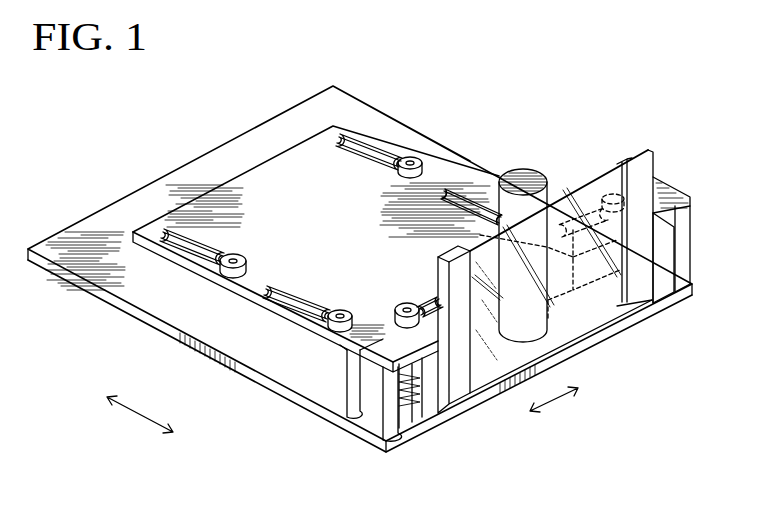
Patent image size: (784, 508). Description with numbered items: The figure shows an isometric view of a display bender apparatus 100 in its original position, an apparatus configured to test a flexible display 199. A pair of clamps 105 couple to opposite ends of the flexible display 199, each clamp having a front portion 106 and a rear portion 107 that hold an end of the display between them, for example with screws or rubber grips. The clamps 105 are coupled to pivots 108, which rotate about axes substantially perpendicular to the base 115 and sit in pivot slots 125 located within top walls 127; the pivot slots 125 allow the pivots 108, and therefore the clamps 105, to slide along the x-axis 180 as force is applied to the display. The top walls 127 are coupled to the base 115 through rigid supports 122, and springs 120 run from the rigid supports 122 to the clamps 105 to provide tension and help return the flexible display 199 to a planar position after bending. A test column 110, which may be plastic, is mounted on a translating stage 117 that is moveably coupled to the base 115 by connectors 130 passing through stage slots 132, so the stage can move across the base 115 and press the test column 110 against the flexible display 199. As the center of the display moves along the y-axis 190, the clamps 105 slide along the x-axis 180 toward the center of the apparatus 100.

The display bender apparatus 100 is at (753, 308).
The clamps 105 is at (468, 375).
The front portion 106 is at (637, 190).
The rear portion 107 is at (623, 160).
The pivots 108 is at (405, 417).
The test column 110 is at (530, 170).
The base 115 is at (182, 312).
The translating stage 117 is at (262, 178).
The springs 120 is at (683, 247).
The rigid supports 122 is at (383, 420).
The pivot slots 125 is at (410, 293).
The top walls 127 is at (338, 340).
The connectors 130 is at (426, 158).
The stage slots 132 is at (360, 150).
The x-axis 180 is at (553, 398).
The y-axis 190 is at (130, 412).
The flexible display 199 is at (568, 300).